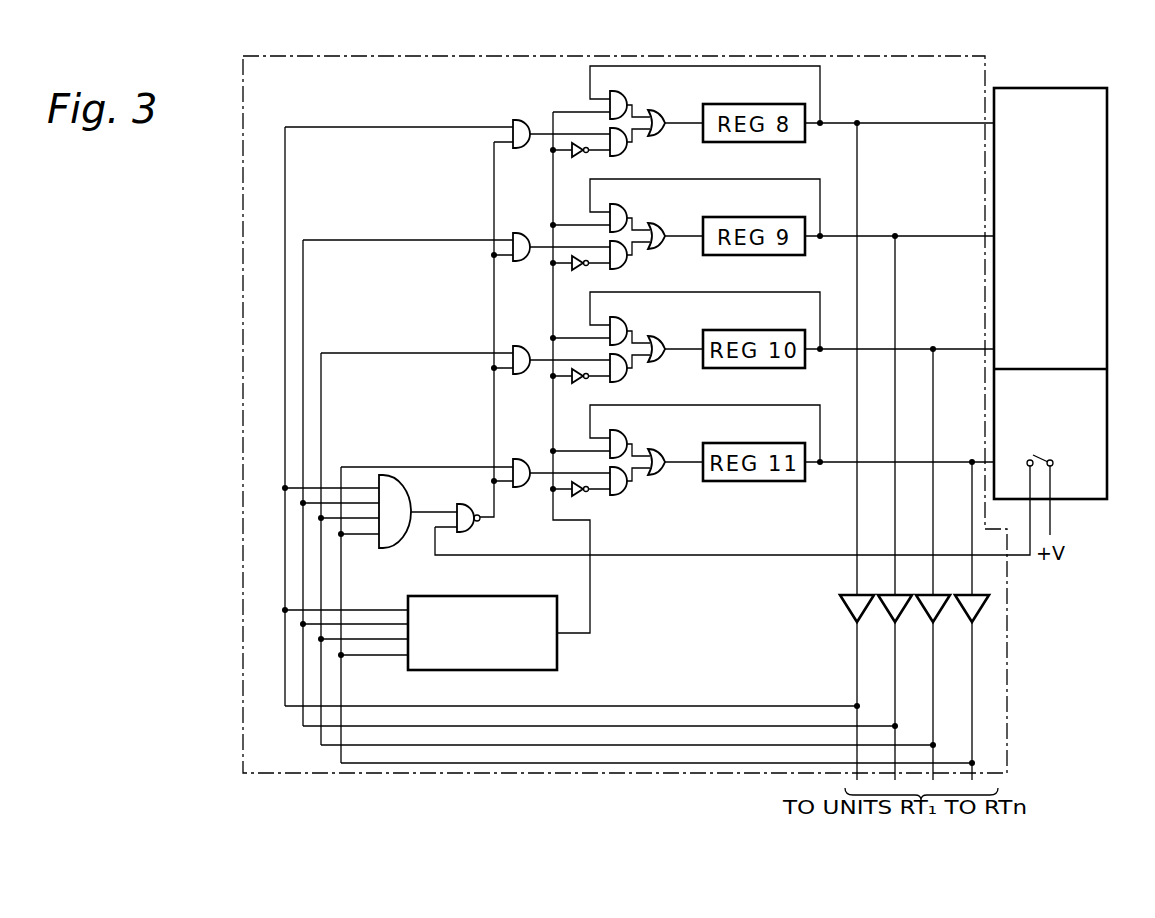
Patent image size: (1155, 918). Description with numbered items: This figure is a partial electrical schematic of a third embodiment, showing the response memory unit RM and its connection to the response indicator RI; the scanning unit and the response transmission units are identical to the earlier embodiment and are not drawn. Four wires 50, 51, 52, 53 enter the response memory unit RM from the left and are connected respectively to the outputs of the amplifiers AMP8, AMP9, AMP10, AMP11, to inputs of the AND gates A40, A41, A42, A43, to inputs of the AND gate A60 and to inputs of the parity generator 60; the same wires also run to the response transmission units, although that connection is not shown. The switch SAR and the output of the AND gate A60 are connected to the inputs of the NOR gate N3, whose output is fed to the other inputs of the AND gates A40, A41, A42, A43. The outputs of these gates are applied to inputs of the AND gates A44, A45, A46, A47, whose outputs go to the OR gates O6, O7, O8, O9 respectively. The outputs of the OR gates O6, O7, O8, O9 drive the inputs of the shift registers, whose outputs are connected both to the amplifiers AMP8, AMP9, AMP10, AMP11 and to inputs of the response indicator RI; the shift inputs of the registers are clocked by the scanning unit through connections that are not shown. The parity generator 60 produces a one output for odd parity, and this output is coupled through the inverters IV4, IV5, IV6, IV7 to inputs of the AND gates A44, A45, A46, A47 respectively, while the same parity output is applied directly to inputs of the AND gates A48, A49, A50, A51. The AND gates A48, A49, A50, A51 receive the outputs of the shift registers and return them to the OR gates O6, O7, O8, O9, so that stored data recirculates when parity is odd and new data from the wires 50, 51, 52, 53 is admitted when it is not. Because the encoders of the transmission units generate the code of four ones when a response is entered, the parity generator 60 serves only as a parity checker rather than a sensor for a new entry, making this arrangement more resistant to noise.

The AND gate A40 is at (516, 120).
The AND gate A41 is at (516, 233).
The AND gate A42 is at (516, 346).
The AND gate A43 is at (516, 459).
The AND gate A44 is at (624, 159).
The AND gate A45 is at (624, 272).
The AND gate A46 is at (624, 385).
The AND gate A47 is at (624, 498).
The AND gate A48 is at (624, 97).
The AND gate A49 is at (624, 210).
The AND gate A50 is at (624, 323).
The AND gate A51 is at (624, 436).
The AND gate A60 is at (399, 475).
The NOR gate N3 is at (479, 529).
The inverter IV4 is at (576, 159).
The inverter IV5 is at (576, 273).
The inverter IV6 is at (576, 386).
The inverter IV7 is at (576, 499).
The OR gate O6 is at (661, 117).
The OR gate O7 is at (661, 230).
The OR gate O8 is at (661, 343).
The OR gate O9 is at (661, 456).
The parity generator 60 is at (421, 595).
The wire 50 is at (588, 706).
The wire 51 is at (615, 726).
The wire 52 is at (641, 745).
The wire 53 is at (677, 763).
The amplifier AMP8 is at (842, 605).
The amplifier AMP9 is at (888, 612).
The amplifier AMP10 is at (926, 614).
The amplifier AMP11 is at (965, 618).
The response memory unit RM is at (986, 65).
The response indicator RI is at (1107, 185).
The switch SAR is at (1054, 458).